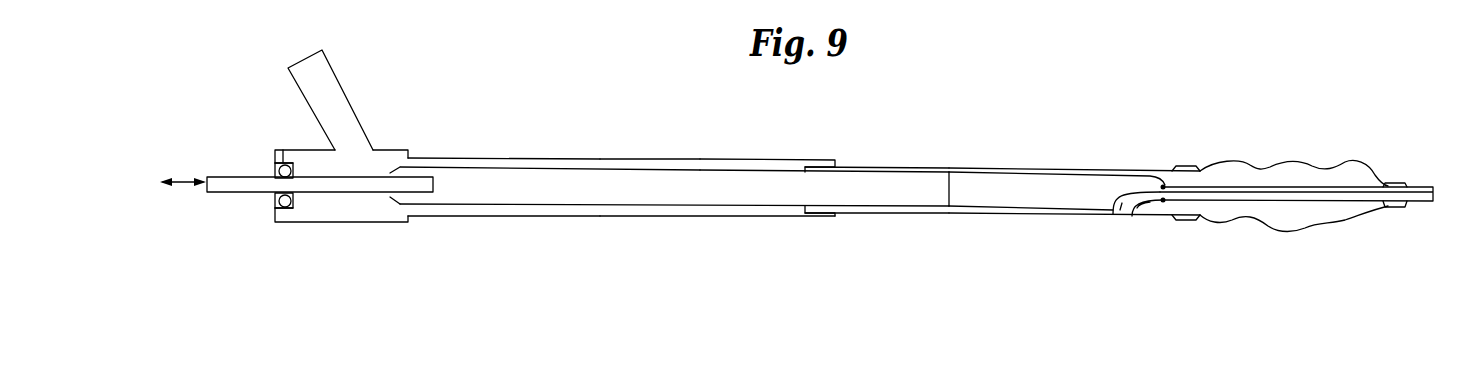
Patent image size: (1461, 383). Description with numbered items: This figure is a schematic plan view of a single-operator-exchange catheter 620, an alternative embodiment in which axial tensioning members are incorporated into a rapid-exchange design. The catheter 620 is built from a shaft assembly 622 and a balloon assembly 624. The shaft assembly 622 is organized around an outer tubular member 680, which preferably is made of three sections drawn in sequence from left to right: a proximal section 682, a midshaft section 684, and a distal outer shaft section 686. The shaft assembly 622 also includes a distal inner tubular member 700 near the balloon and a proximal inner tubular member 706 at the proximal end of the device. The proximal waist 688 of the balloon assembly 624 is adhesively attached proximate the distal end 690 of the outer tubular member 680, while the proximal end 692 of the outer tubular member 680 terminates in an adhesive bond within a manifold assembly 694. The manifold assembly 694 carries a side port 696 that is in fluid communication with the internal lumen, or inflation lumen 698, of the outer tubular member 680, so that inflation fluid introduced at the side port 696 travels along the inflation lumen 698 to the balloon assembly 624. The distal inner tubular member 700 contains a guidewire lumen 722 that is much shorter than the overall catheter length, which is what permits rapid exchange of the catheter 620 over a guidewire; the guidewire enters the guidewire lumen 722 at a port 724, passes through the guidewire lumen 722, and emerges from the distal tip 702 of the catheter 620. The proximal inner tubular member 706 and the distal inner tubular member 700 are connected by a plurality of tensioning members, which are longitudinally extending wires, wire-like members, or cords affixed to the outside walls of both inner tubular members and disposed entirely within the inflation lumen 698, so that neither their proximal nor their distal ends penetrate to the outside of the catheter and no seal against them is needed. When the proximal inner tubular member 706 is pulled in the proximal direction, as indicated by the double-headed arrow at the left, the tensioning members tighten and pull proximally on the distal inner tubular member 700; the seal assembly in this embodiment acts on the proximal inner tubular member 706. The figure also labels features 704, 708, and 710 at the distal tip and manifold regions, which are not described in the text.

The single-operator-exchange catheter 620 is at (658, 159).
The shaft assembly 622 is at (567, 216).
The balloon assembly 624 is at (1265, 168).
The outer tubular member 680 is at (747, 158).
The proximal section 682 is at (568, 158).
The midshaft section 684 is at (897, 170).
The distal outer shaft section 686 is at (1070, 170).
The proximal waist 688 is at (1172, 220).
The distal end 690 is at (1192, 166).
The proximal end 692 is at (455, 158).
The manifold assembly 694 is at (372, 160).
The side port 696 is at (312, 68).
The inflation lumen 698 is at (773, 212).
The distal inner tubular member 700 is at (1328, 187).
The distal tip 702 is at (1435, 160).
The distal lower band 704 is at (1397, 208).
The proximal inner tubular member 706 is at (355, 185).
The housing wall 708 is at (278, 152).
The bearing housing 710 is at (271, 158).
The guidewire lumen 722 is at (1343, 196).
The port 724 is at (1117, 214).